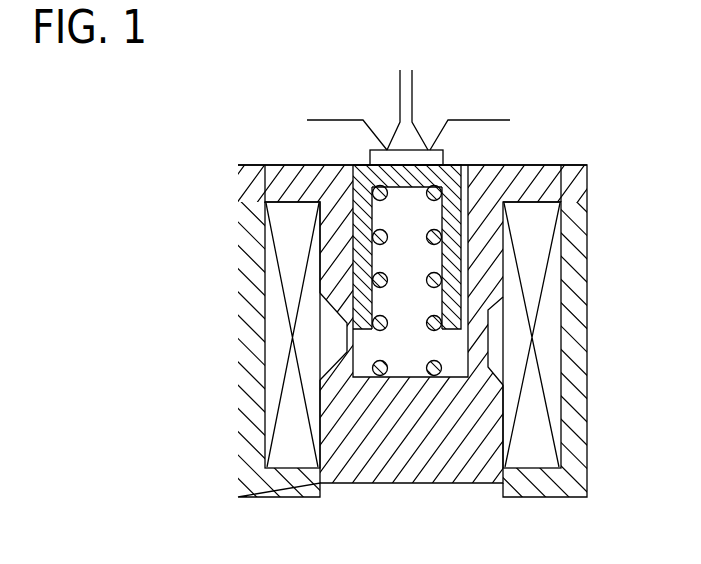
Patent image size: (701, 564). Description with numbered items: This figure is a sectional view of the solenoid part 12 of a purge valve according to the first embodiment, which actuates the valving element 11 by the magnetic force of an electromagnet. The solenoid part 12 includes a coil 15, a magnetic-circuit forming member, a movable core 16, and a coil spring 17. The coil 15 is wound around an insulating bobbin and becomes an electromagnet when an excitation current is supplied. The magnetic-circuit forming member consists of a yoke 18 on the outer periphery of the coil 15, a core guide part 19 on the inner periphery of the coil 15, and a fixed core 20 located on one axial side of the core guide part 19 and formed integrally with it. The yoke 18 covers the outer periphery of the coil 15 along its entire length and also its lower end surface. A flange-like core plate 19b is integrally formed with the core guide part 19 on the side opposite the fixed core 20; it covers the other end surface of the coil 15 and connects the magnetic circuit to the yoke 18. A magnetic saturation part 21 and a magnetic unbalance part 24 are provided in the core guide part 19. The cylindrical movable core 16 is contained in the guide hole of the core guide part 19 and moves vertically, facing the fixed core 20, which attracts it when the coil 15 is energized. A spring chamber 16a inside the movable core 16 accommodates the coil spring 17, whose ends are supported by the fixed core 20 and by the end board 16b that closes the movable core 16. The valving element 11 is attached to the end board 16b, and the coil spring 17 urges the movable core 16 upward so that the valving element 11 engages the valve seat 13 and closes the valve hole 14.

The valving element 11 is at (445, 159).
The solenoid part 12 is at (350, 299).
The valve seat 13 is at (441, 141).
The valve hole 14 is at (407, 140).
The coil 15 is at (533, 287).
The movable core 16 is at (399, 219).
The spring chamber 16a is at (422, 276).
The end board 16b is at (386, 178).
The coil spring 17 is at (376, 274).
The yoke 18 is at (568, 399).
The core guide part 19 is at (337, 231).
The core plate 19b is at (280, 175).
The fixed core 20 is at (403, 440).
The magnetic saturation part 21 is at (480, 345).
The magnetic unbalance part 24 is at (340, 337).